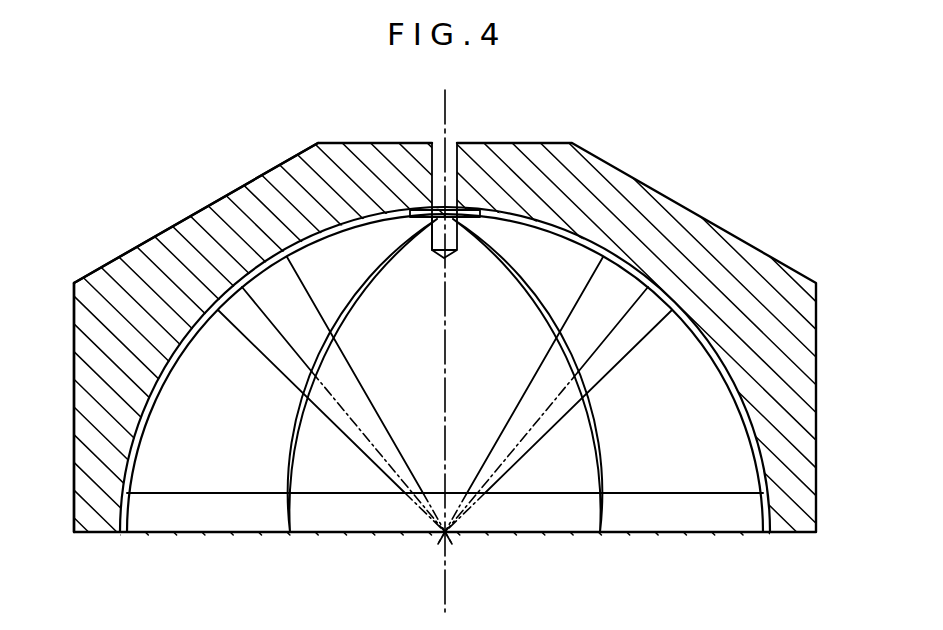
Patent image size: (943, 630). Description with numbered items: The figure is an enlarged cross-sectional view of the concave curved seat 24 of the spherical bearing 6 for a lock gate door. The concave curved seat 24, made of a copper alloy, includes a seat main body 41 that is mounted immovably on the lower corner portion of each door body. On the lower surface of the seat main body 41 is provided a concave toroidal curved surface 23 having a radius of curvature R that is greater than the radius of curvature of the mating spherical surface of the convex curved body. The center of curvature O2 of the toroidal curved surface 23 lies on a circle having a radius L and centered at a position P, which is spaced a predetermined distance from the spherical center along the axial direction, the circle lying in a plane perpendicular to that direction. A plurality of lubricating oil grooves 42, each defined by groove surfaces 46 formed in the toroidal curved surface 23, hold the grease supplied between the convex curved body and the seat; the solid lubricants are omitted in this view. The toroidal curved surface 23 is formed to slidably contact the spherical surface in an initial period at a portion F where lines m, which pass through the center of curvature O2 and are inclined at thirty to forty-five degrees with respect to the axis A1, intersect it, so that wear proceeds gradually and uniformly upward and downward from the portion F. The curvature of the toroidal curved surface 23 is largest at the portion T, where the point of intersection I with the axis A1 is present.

The spherical bearing 6 is at (316, 140).
The concave curved seat 24 is at (168, 238).
The seat main body 41 is at (73, 397).
The concave toroidal curved surface 23 is at (346, 232).
The lubricating oil groove 42 is at (167, 370).
The groove surface 46 is at (187, 338).
The portion of largest curvature T is at (459, 232).
The point of intersection I is at (430, 232).
The initial contact portion F is at (307, 266).
The radius of curvature R is at (291, 336).
The axis A1 is at (446, 358).
The line m is at (370, 397).
The center of curvature O2 is at (445, 534).
The radius L is at (445, 534).
The position P is at (445, 534).